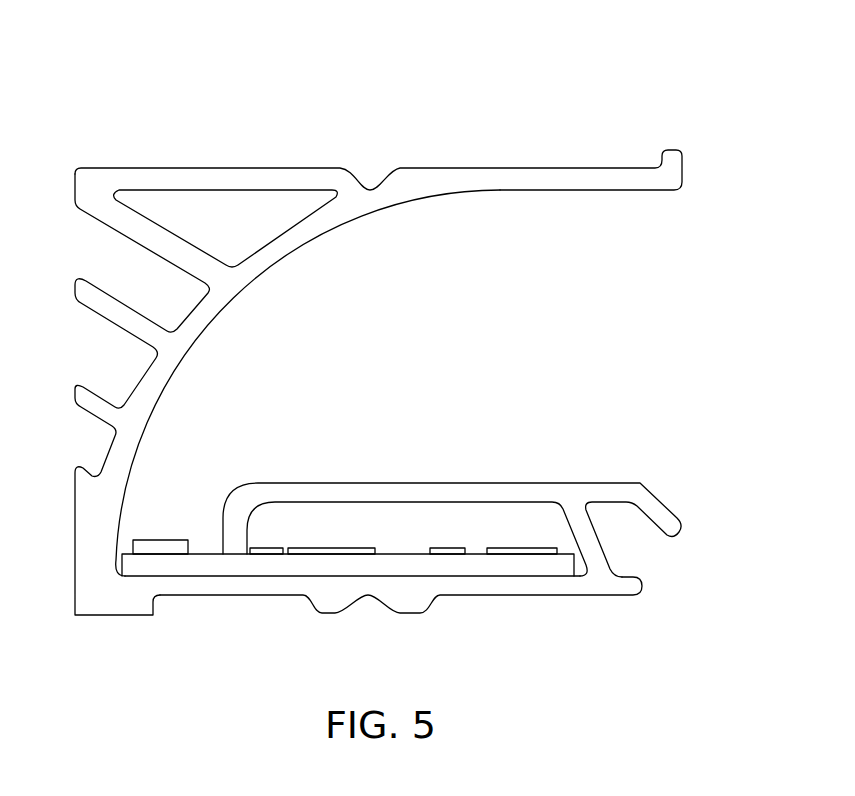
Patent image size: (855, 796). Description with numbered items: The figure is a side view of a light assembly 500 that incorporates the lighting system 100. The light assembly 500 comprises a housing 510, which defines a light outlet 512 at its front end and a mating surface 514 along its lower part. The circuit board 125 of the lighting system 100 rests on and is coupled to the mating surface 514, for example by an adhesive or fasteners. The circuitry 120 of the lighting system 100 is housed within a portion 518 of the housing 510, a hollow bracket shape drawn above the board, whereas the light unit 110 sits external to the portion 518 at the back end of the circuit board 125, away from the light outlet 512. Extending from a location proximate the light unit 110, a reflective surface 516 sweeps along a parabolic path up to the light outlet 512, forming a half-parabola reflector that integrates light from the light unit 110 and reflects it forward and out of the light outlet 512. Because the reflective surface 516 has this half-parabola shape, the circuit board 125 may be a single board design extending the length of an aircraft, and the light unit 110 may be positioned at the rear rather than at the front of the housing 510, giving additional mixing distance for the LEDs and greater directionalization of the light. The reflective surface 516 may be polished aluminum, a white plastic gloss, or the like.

The light assembly 500 is at (140, 81).
The housing 510 is at (435, 177).
The light outlet 512 is at (690, 352).
The mating surface 514 is at (500, 577).
The reflective surface 516 is at (252, 283).
The portion of the housing 518 is at (503, 483).
The lighting system 100 is at (200, 577).
The light unit 110 is at (134, 555).
The circuitry 120 is at (311, 561).
The circuit board 125 is at (395, 567).